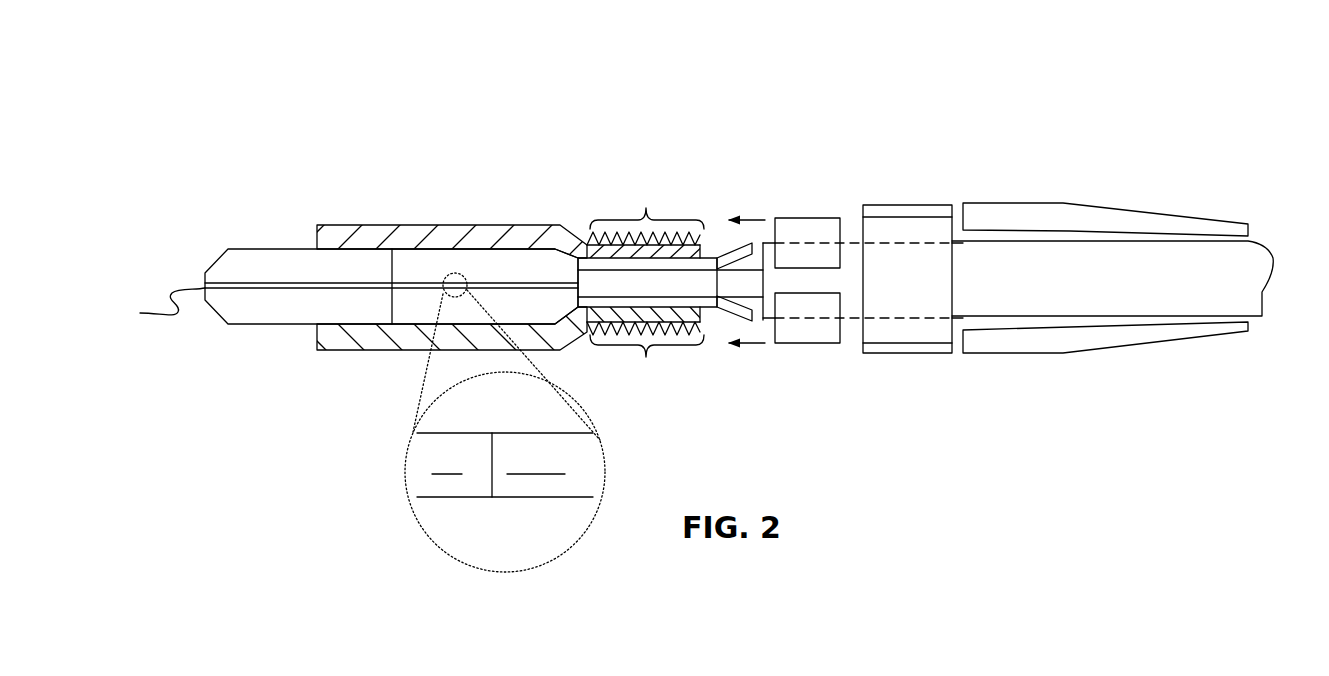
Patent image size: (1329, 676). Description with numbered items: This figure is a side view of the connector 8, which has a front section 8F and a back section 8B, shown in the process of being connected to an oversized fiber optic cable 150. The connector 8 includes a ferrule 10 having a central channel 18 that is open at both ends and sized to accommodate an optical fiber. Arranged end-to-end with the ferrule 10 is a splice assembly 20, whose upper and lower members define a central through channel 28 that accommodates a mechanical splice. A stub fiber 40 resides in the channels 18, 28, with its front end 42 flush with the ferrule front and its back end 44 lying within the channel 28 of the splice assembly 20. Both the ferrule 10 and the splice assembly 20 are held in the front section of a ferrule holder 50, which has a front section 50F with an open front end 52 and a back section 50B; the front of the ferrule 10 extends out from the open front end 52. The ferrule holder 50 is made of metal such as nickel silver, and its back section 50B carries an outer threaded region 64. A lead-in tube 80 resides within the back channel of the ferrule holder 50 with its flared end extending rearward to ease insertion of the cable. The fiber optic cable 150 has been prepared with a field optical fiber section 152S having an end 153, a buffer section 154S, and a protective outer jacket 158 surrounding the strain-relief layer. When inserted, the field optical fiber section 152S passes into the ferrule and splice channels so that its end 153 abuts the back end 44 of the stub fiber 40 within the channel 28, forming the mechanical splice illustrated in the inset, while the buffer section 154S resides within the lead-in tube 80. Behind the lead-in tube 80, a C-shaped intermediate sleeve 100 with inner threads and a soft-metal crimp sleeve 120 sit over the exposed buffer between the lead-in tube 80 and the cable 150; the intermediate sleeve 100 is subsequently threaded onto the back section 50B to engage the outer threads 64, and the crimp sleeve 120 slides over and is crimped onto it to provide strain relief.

The connector 8 is at (1162, 101).
The front section 8F is at (340, 450).
The back section 8B is at (867, 431).
The ferrule 10 is at (264, 242).
The central channel 18 is at (243, 283).
The splice assembly 20 is at (418, 244).
The central through channel 28 is at (418, 292).
The stub fiber 40 is at (267, 289).
The front end 42 is at (157, 309).
The back end 44 is at (492, 433).
The ferrule holder 50 is at (392, 208).
The front section 50F is at (366, 358).
The back section 50B is at (591, 361).
The open front end 52 is at (317, 226).
The outer threaded region 64 is at (645, 265).
The lead-in tube 80 is at (713, 331).
The intermediate sleeve 100 is at (802, 201).
The crimp sleeve 120 is at (888, 201).
The fiber optic cable 150 is at (1279, 248).
The field optical fiber section 152S is at (513, 278).
The end 153 is at (492, 497).
The buffer section 154S is at (712, 282).
The protective outer jacket 158 is at (1102, 278).